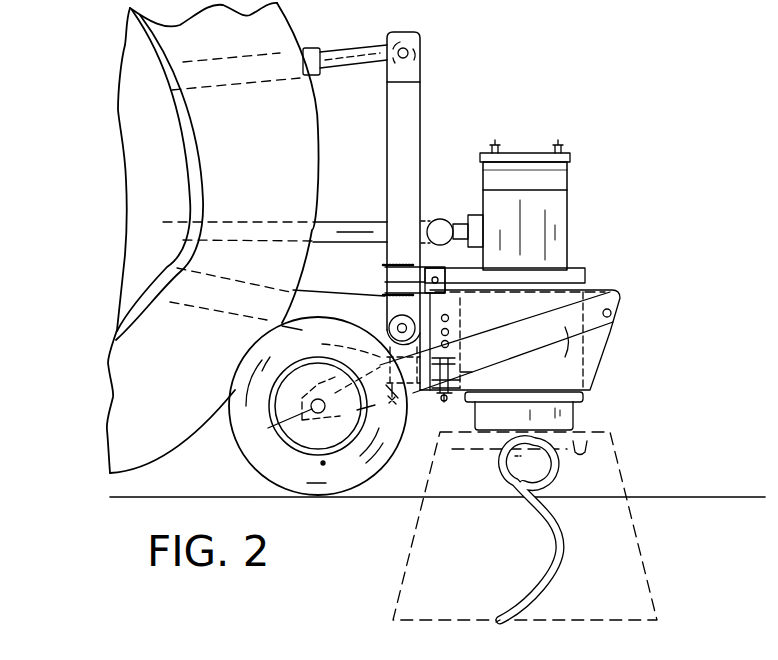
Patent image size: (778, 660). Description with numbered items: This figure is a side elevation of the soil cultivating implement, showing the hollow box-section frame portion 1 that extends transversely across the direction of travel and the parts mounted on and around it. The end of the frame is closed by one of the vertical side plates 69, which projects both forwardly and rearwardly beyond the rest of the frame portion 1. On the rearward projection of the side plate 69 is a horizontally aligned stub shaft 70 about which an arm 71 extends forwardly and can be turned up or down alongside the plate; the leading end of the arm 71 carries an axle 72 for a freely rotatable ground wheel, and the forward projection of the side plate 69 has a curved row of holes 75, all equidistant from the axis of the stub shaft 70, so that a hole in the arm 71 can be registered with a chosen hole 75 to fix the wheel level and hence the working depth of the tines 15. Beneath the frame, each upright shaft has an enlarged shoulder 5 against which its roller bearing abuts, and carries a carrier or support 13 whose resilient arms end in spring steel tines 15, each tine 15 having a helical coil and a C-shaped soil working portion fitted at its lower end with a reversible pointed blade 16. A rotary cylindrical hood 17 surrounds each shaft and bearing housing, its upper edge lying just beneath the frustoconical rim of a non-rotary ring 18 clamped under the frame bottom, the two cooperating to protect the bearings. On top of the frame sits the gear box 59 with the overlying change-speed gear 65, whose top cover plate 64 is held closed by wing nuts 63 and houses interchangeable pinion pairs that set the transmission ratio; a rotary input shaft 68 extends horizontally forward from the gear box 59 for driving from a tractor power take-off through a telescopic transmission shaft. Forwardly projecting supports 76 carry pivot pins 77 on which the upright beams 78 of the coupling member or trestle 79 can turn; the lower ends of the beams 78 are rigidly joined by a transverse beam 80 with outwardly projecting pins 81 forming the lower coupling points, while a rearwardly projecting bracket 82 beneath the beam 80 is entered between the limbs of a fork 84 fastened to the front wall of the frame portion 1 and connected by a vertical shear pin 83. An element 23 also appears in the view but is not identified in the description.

The hollow box-section frame portion 1 is at (600, 291).
The enlarged diameter shoulder 5 is at (412, 548).
The carrier or support 13 is at (574, 455).
The tine 15 is at (564, 549).
The reversible pointed blade 16 is at (522, 606).
The cylindrical hood 17 is at (575, 412).
The ring 18 is at (470, 370).
The wheel pin 23 is at (330, 475).
The gear box 59 is at (553, 208).
The wing nuts 63 is at (553, 147).
The top cover plate 64 is at (568, 158).
The change-speed gear 65 is at (563, 170).
The rotary input shaft 68 is at (442, 218).
The side plates 69 is at (597, 375).
The stub shafts 70 is at (612, 313).
The arms 71 is at (533, 347).
The axles 72 is at (278, 420).
The holes 75 is at (448, 322).
The supports 76 is at (548, 272).
The pivot pin 77 is at (425, 280).
The upright beam 78 is at (388, 175).
The coupling member or trestle 79 is at (386, 125).
The transverse beam 80 is at (318, 406).
The pins 81 is at (388, 316).
The bracket 82 is at (329, 402).
The shear pin 83 is at (440, 400).
The fork 84 is at (464, 370).